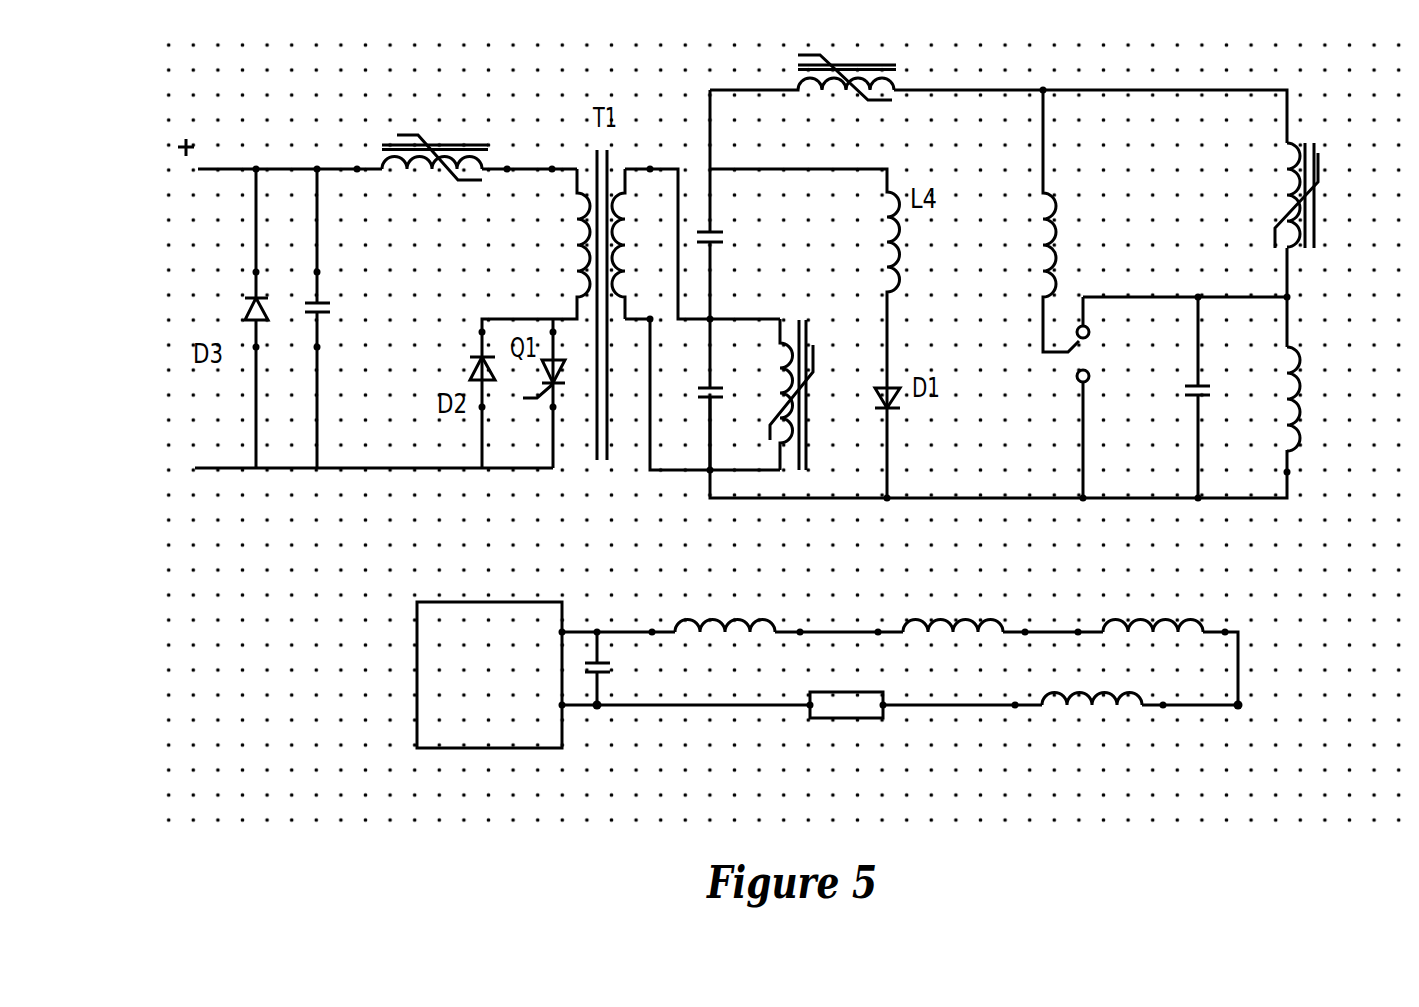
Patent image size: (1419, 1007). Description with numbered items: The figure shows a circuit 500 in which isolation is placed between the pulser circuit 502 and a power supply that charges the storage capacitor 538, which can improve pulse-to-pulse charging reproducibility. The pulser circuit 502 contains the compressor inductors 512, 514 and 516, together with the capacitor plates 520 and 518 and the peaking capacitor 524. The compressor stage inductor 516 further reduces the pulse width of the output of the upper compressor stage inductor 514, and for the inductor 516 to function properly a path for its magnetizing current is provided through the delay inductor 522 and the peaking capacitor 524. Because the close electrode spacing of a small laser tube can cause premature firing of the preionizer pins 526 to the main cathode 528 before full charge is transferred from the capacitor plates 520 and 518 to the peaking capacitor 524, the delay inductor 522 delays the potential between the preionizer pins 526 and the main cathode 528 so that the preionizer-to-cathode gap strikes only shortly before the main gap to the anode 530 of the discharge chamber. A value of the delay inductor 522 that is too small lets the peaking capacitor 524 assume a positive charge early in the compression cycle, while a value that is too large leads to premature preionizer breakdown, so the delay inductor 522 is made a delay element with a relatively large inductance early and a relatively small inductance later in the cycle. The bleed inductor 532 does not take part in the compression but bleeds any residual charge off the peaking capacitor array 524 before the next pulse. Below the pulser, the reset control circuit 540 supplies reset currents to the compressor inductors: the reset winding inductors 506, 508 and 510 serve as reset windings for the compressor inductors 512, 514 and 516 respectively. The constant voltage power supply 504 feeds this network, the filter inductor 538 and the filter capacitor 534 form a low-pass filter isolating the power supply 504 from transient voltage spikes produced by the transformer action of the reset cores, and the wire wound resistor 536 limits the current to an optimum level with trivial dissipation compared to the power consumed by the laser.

The circuit 500 is at (347, 813).
The pulser circuit 502 is at (1333, 497).
The power supply PS1 504 is at (552, 742).
The inductor L1A 506 is at (1120, 713).
The inductor L2A 508 is at (925, 605).
The inductor L3A 510 is at (1167, 635).
The inductor L1 512 is at (448, 127).
The inductor L2 514 is at (820, 407).
The inductor L3 516 is at (852, 53).
The capacitor C3 518 is at (707, 227).
The capacitor C2 520 is at (695, 392).
The inductor L7 522 is at (1333, 170).
The peaking capacitor C4 524 is at (1203, 385).
The preionizer pins P 526 is at (1067, 338).
The main cathode C 528 is at (1092, 332).
The anode A 530 is at (1078, 378).
The inductor L6 532 is at (1315, 398).
The capacitor C5 534 is at (608, 680).
The wire wound resistor R1 536 is at (873, 718).
The storage capacitor C1 538 is at (325, 315).
The reset control circuit 540 is at (413, 634).